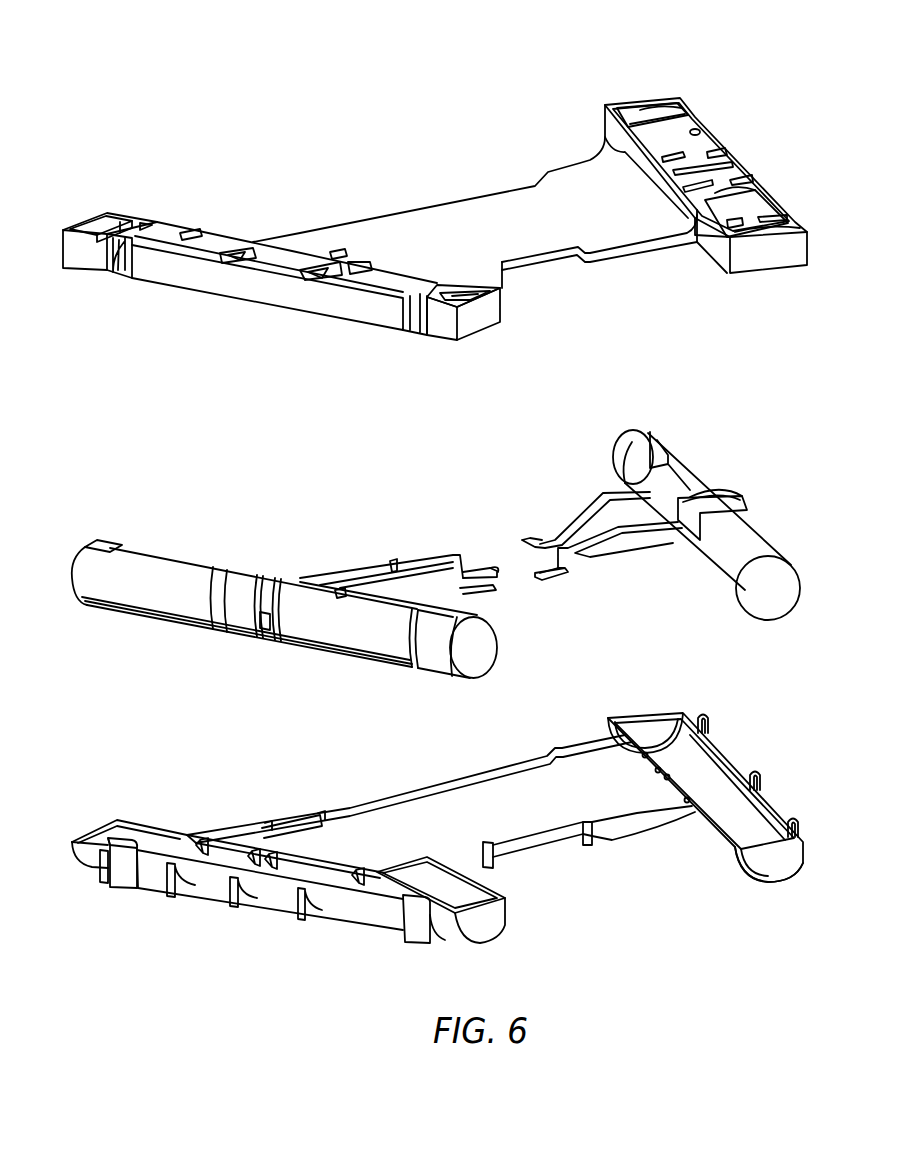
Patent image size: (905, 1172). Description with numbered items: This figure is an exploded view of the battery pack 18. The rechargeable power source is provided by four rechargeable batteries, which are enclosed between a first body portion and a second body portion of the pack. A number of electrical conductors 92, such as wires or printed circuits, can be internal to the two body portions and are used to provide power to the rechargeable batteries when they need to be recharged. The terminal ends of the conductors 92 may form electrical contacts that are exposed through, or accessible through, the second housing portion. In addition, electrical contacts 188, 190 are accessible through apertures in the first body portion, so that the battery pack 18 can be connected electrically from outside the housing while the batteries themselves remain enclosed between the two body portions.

The battery pack 18 is at (437, 849).
The electrical conductors 92 is at (493, 595).
The electrical contact 188 is at (278, 588).
The electrical contact 190 is at (739, 519).